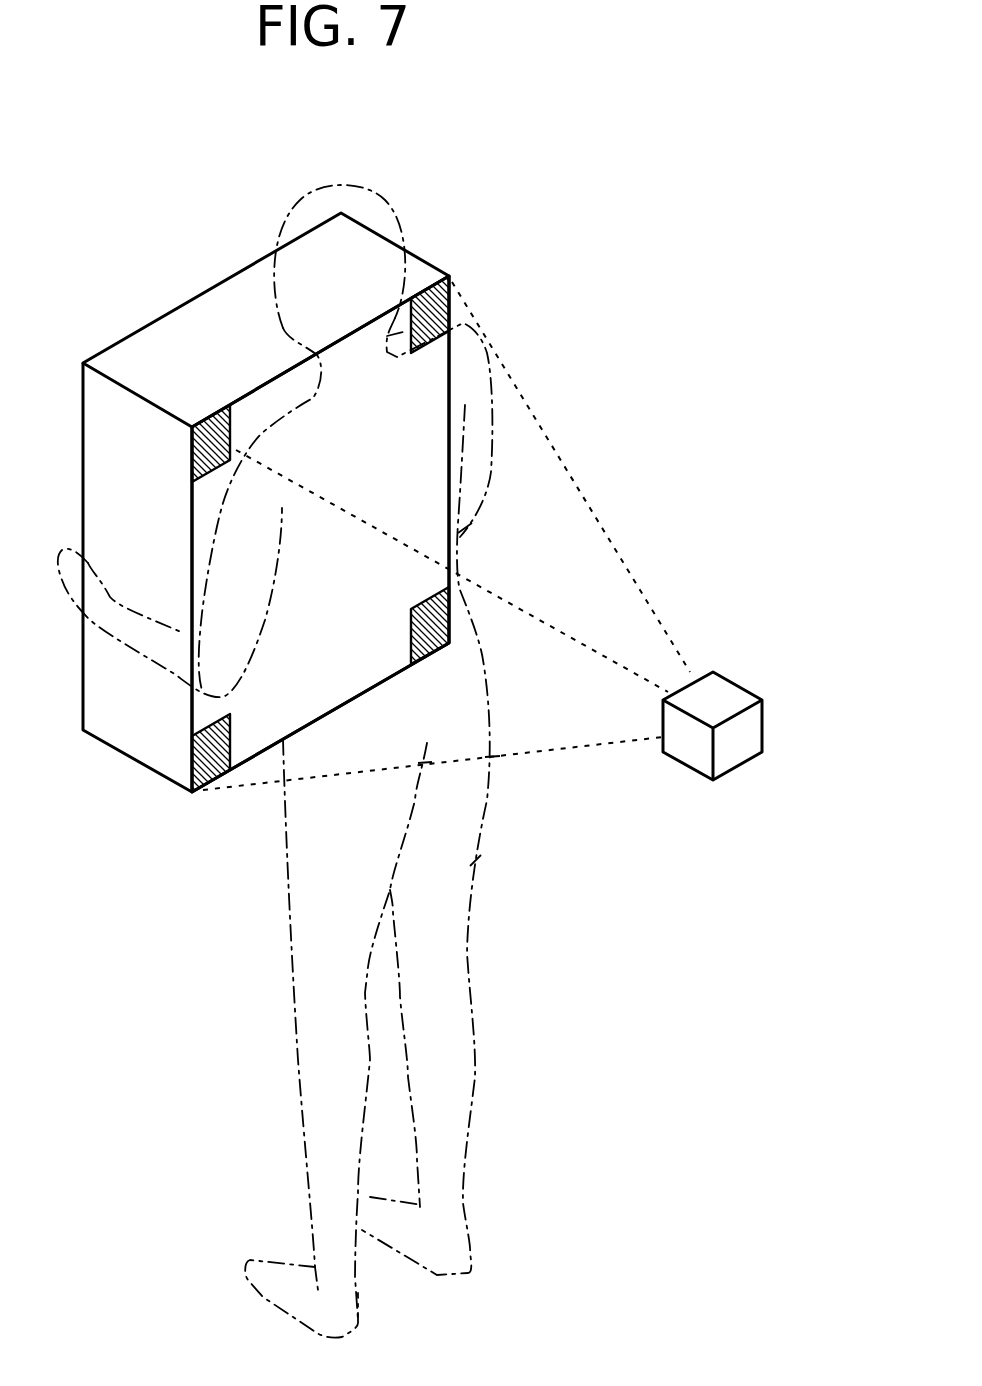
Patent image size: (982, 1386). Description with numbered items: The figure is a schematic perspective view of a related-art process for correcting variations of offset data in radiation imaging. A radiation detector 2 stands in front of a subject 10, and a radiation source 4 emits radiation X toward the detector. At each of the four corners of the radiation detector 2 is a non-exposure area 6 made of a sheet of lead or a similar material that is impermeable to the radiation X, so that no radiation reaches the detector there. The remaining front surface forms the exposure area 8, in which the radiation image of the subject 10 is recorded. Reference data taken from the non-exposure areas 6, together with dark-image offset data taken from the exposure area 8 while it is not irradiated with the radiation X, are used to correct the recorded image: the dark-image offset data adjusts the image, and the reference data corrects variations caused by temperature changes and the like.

The radiation detector 2 is at (104, 482).
The radiation source 4 is at (727, 698).
The non-exposure areas 6 is at (224, 445).
The exposure area 8 is at (410, 398).
The subject 10 is at (478, 862).
The radiation X is at (614, 548).